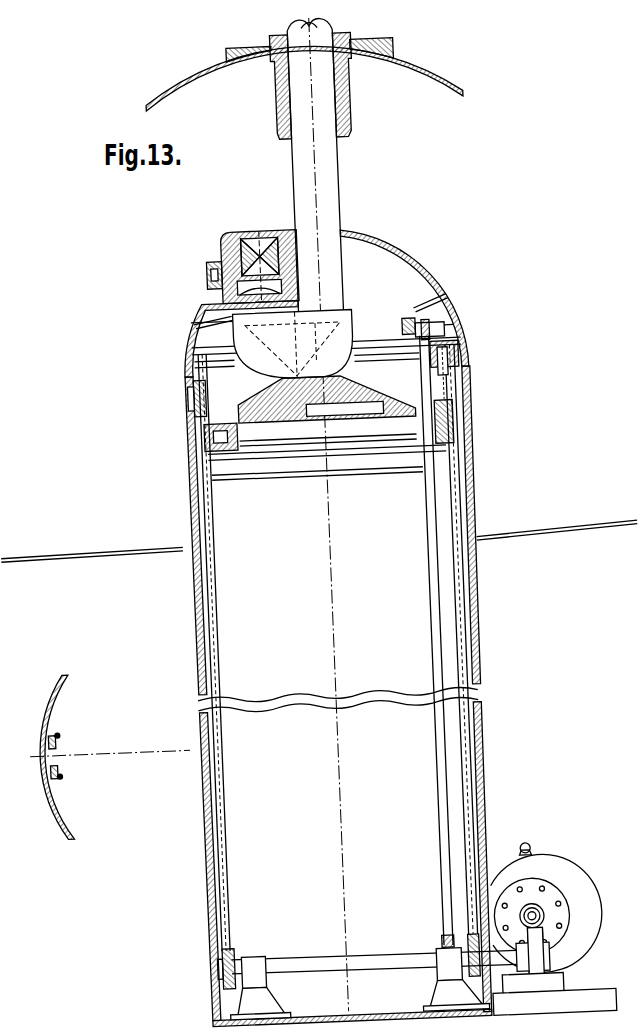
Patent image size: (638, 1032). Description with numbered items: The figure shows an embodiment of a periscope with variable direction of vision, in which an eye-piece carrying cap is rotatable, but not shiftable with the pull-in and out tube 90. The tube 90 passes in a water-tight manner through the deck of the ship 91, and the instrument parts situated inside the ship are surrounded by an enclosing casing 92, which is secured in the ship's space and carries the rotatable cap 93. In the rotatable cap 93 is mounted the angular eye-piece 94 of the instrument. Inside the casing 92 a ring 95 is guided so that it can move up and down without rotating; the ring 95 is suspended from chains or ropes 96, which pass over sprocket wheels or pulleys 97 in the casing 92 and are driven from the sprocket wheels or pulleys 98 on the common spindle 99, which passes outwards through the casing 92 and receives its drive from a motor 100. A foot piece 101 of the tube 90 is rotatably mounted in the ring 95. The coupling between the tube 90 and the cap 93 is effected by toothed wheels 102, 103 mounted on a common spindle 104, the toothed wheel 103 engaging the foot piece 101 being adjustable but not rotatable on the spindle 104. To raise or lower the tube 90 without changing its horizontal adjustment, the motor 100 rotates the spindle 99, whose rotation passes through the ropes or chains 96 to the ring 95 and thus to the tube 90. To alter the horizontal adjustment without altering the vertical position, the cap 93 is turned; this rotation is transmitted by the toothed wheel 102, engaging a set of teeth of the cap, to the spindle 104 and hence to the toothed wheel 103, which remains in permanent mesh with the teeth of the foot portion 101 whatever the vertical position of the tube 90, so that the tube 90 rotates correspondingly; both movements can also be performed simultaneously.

The pull-in and out tube 90 is at (325, 197).
The deck of the ship 91 is at (424, 77).
The enclosing casing 92 is at (450, 685).
The rotatable cap 93 is at (416, 275).
The angular eye-piece 94 is at (230, 255).
The ring 95 is at (207, 444).
The chains or ropes 96 is at (430, 625).
The sprocket wheels or pulleys 97 is at (433, 388).
The sprocket wheels or pulleys 98 is at (347, 940).
The common spindle 99 is at (276, 968).
The motor 100 is at (548, 923).
The foot piece 101 is at (252, 411).
The toothed wheel 102 is at (423, 342).
The toothed wheel 103 is at (431, 425).
The common spindle 104 is at (414, 546).